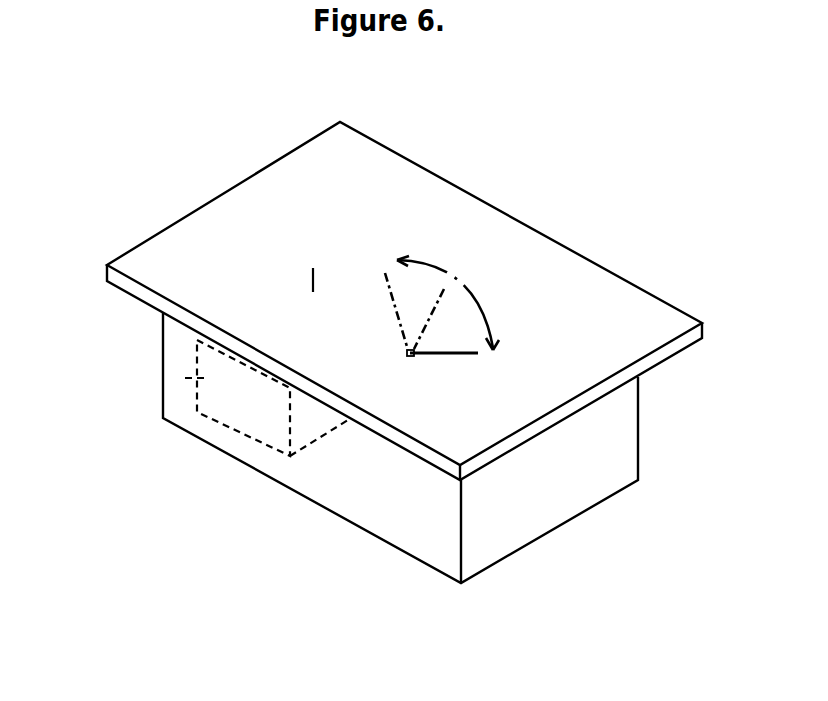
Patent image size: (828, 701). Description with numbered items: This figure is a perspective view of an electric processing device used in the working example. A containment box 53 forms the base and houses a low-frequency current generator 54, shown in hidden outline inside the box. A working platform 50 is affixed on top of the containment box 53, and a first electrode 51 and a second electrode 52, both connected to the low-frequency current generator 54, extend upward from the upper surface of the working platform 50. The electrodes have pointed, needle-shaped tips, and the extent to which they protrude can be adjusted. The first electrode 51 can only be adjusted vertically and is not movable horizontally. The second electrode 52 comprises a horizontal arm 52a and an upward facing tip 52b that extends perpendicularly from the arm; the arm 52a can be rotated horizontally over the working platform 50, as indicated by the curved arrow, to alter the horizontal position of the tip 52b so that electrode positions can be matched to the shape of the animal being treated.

The working platform 50 is at (192, 235).
The first electrode 51 is at (312, 281).
The second electrode 52 is at (407, 353).
The horizontal arm 52a is at (441, 356).
The upward facing tip 52b is at (481, 354).
The containment box 53 is at (353, 497).
The low-frequency current generator 54 is at (165, 387).